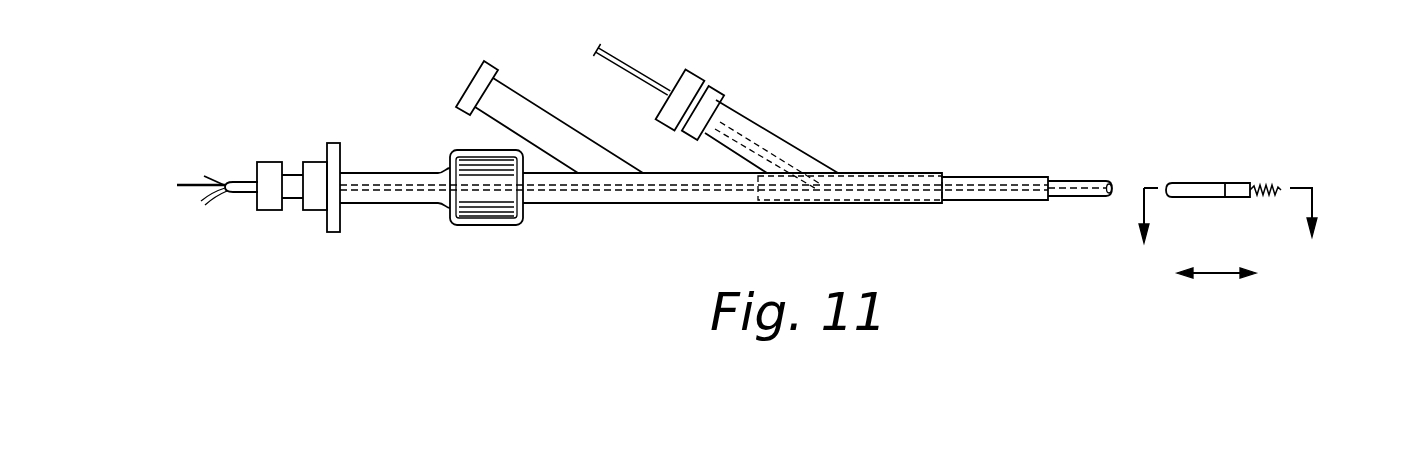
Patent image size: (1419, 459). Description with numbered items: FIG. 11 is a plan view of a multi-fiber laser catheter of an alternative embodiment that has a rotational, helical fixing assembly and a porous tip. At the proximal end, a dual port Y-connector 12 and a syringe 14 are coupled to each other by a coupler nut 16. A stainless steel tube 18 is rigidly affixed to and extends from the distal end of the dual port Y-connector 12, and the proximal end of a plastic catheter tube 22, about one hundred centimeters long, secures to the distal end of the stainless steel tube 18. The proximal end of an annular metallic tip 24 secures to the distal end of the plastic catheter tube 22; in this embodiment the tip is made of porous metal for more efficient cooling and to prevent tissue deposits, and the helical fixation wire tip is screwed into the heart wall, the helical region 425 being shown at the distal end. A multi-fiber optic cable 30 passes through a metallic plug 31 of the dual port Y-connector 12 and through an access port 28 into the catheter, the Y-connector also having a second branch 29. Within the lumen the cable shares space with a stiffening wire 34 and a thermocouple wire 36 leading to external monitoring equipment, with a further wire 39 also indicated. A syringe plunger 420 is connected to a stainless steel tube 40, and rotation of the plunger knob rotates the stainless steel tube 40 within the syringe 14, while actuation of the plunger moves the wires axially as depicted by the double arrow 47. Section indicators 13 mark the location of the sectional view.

The dual port Y-connector 12 is at (860, 80).
The syringe 14 is at (366, 136).
The coupler nut 16 is at (485, 213).
The stainless steel tube 18 is at (957, 173).
The plastic catheter tube 22 is at (1088, 181).
The annular metallic tip 24 is at (1238, 197).
The coil tip 425 is at (1275, 169).
The access port 28 is at (783, 131).
The side port branch 29 is at (562, 101).
The multi-fiber optic cable 30 is at (646, 52).
The metallic plug 31 is at (690, 74).
The stiffening wire 34 is at (187, 185).
The thermocouple wire 36 is at (208, 171).
The lower tab 39 is at (207, 199).
The stainless steel tube 40 is at (238, 181).
The syringe plunger 420 is at (335, 143).
The section line 13- 13 is at (1233, 226).
The double arrow 47 is at (1207, 276).